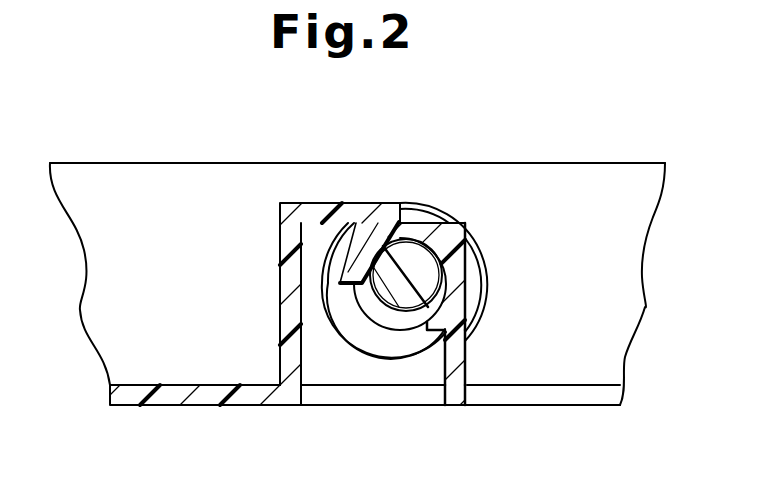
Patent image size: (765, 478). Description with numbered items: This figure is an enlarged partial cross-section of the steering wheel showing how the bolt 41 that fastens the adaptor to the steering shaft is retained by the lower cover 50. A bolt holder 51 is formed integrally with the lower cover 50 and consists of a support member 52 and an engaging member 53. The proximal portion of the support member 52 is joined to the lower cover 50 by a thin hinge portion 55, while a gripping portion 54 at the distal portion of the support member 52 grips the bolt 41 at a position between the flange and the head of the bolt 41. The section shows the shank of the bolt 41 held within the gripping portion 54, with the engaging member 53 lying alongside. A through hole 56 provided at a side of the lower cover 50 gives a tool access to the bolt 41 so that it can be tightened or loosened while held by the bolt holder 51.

The bolt 41 is at (400, 297).
The lower cover 50 is at (127, 400).
The bolt holder 51 is at (352, 186).
The support member 52 is at (462, 347).
The engaging member 53 is at (358, 203).
The gripping portion 54 is at (450, 237).
The thin hinge portion 55 is at (468, 392).
The through hole 56 is at (347, 327).